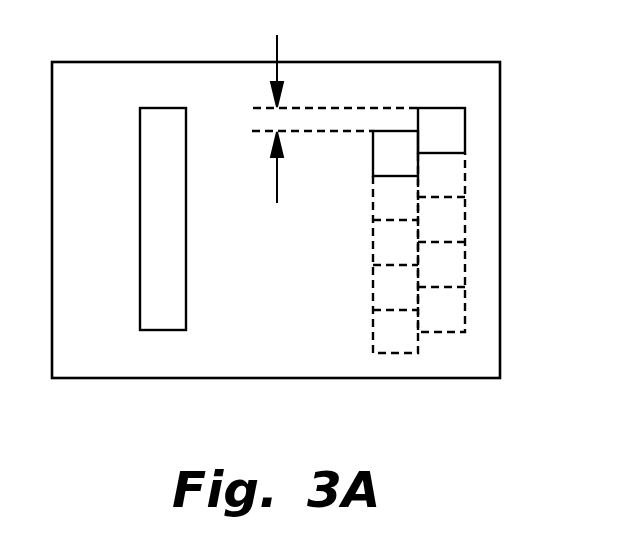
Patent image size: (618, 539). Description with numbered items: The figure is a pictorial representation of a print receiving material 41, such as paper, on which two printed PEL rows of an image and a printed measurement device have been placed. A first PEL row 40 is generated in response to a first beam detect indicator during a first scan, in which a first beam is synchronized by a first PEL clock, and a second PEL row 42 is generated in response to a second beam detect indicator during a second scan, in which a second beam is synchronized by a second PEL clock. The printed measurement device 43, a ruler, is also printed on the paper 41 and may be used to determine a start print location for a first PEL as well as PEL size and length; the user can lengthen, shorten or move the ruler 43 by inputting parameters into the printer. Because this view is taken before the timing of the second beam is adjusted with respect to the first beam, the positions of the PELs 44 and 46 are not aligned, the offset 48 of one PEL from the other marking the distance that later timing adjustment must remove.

The first PEL row 40 is at (450, 108).
The print receiving material 41 is at (297, 294).
The second PEL row 42 is at (389, 131).
The printed measurement device 43 is at (155, 108).
The PEL 44 is at (445, 134).
The PEL 46 is at (388, 158).
The offset 48 is at (262, 119).